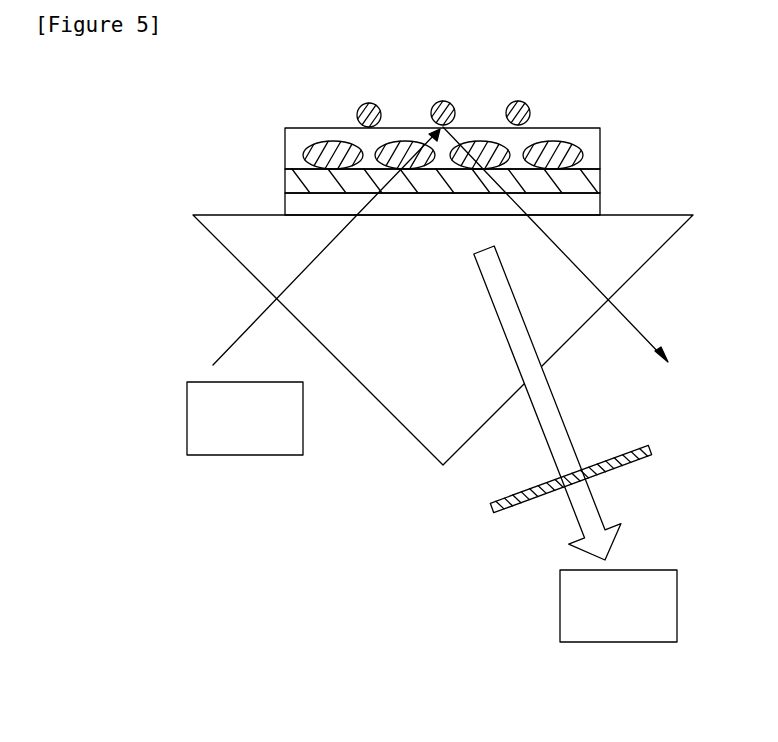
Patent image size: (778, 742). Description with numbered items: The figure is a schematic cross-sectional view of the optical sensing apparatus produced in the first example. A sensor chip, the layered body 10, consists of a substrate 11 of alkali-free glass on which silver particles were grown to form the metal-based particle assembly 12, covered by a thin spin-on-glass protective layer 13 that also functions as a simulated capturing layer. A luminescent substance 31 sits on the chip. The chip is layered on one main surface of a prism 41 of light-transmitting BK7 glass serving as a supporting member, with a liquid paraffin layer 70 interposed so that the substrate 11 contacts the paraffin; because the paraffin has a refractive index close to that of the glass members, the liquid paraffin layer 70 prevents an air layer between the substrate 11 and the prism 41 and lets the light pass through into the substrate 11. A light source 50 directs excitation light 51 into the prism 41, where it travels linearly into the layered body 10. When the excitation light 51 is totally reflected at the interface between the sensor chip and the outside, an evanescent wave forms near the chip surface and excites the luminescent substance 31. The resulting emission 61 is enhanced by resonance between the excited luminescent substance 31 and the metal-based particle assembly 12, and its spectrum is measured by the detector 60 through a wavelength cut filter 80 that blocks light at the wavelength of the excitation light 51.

The layered body 10 is at (502, 168).
The substrate 11 is at (602, 180).
The metal-based particle assembly 12 is at (584, 158).
The protective layer 13 is at (602, 135).
The luminescent substance 31 is at (526, 102).
The prism 41 is at (635, 258).
The light source 50 is at (303, 418).
The excitation light 51 is at (237, 343).
The detector 60 is at (677, 606).
The emission 61 is at (567, 427).
The liquid paraffin layer 70 is at (602, 204).
The wavelength cut filter 80 is at (645, 456).